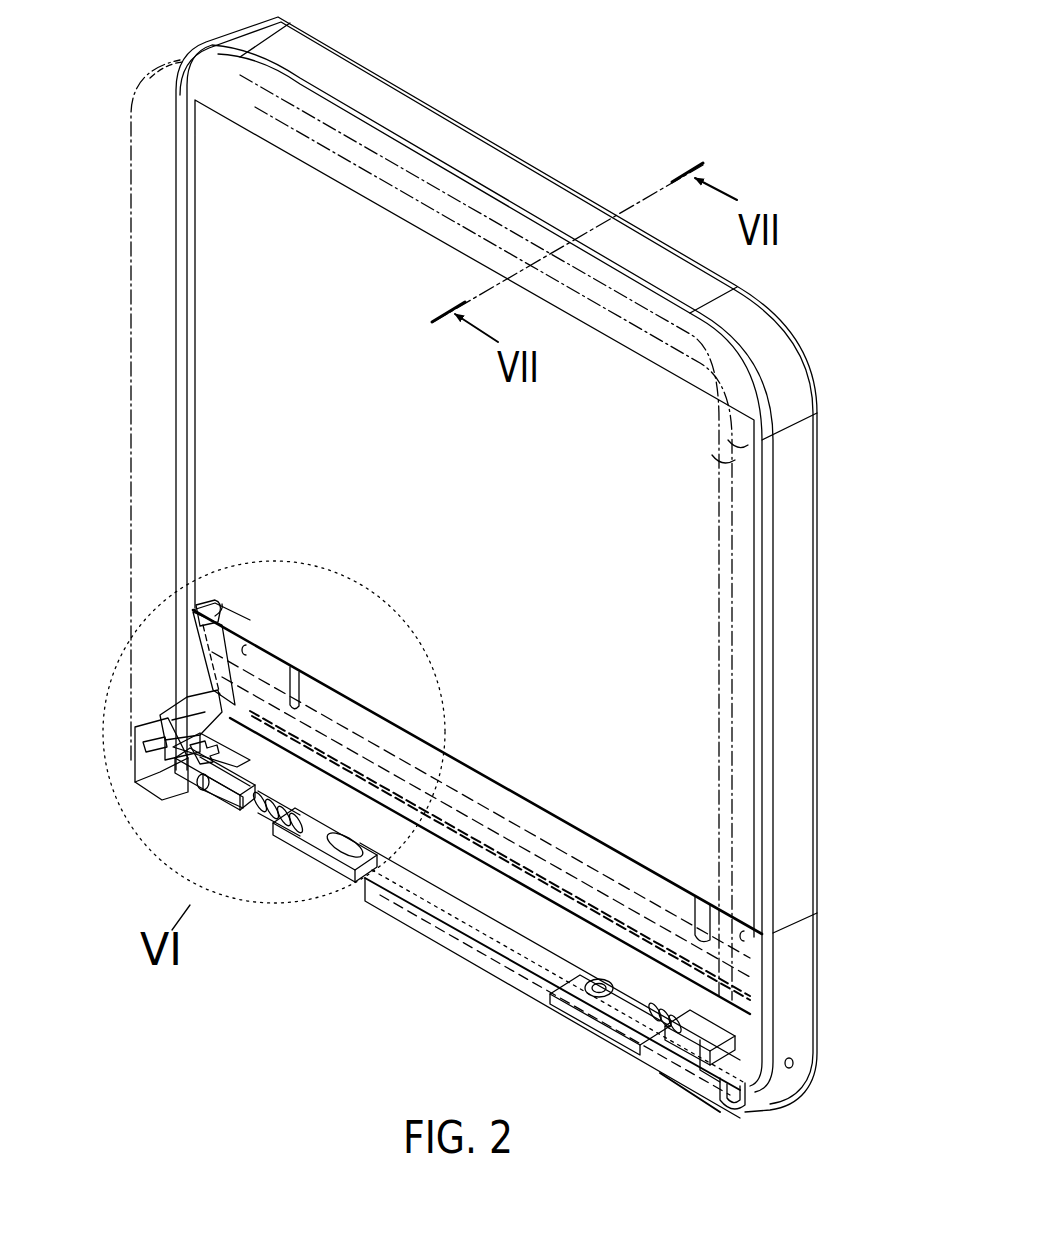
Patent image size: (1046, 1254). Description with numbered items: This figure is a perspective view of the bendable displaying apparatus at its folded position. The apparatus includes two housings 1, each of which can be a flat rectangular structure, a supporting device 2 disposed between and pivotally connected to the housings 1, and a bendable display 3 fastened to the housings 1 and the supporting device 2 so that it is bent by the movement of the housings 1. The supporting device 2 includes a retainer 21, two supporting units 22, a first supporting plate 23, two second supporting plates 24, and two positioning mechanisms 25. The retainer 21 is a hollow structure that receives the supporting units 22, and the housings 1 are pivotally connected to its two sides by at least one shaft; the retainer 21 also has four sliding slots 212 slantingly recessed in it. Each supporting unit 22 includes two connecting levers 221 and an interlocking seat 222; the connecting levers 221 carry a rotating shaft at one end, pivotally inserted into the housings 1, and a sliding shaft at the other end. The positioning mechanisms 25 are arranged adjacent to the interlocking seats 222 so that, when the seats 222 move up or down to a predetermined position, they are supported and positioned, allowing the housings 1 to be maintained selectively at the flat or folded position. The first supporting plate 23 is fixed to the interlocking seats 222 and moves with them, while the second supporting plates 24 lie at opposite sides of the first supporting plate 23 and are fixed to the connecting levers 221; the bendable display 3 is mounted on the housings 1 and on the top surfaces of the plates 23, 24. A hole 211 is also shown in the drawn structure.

The housing 1 is at (126, 351).
The supporting device 2 is at (432, 838).
The bendable display 3 is at (242, 476).
The retainer 21 is at (665, 1065).
The hole 211 is at (793, 1065).
The sliding slot 212 is at (182, 705).
The supporting unit 22 is at (139, 651).
The connecting lever 221 is at (198, 628).
The interlocking seat 222 is at (140, 770).
The first supporting plate 23 is at (402, 918).
The second supporting plate 24 is at (232, 603).
The positioning mechanism 25 is at (200, 803).